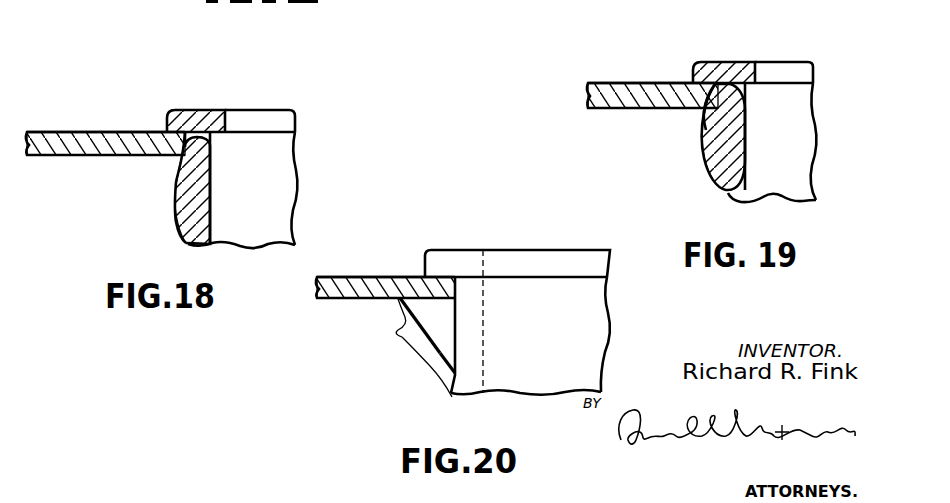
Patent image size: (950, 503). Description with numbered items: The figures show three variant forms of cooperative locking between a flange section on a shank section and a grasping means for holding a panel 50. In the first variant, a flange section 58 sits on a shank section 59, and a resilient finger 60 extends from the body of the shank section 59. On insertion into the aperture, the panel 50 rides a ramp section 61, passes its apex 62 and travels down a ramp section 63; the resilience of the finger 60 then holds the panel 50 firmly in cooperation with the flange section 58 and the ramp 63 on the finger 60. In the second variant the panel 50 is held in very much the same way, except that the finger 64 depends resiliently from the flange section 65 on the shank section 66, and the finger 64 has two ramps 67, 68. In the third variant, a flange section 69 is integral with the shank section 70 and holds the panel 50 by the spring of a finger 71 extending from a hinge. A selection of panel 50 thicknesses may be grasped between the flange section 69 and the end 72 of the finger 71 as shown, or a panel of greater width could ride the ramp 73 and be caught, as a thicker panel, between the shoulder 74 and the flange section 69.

In FIG. 18, the panel 50 is at (95, 131).
In FIG. 19, the panel 50 is at (641, 85).
In FIG. 20, the panel 50 is at (396, 278).
In FIG. 18, the flange section 58 is at (189, 110).
In FIG. 18, the shank section 59 is at (277, 176).
In FIG. 18, the resilient finger 60 is at (183, 221).
In FIG. 18, the ramp section 61 is at (184, 232).
In FIG. 18, the apex 62 is at (186, 198).
In FIG. 18, the ramp section 63 is at (180, 178).
In FIG. 19, the finger 64 is at (710, 143).
In FIG. 19, the flange section 65 is at (715, 63).
In FIG. 19, the shank section 66 is at (800, 122).
In FIG. 19, the ramp 67 is at (710, 173).
In FIG. 19, the ramp 68 is at (698, 115).
In FIG. 20, the flange section 69 is at (540, 253).
In FIG. 20, the shank section 70 is at (583, 322).
In FIG. 20, the finger 71 is at (427, 352).
In FIG. 20, the free end of spring arm 72 is at (451, 378).
In FIG. 20, the ramp 73 is at (410, 350).
In FIG. 20, the shoulder 74 is at (398, 332).